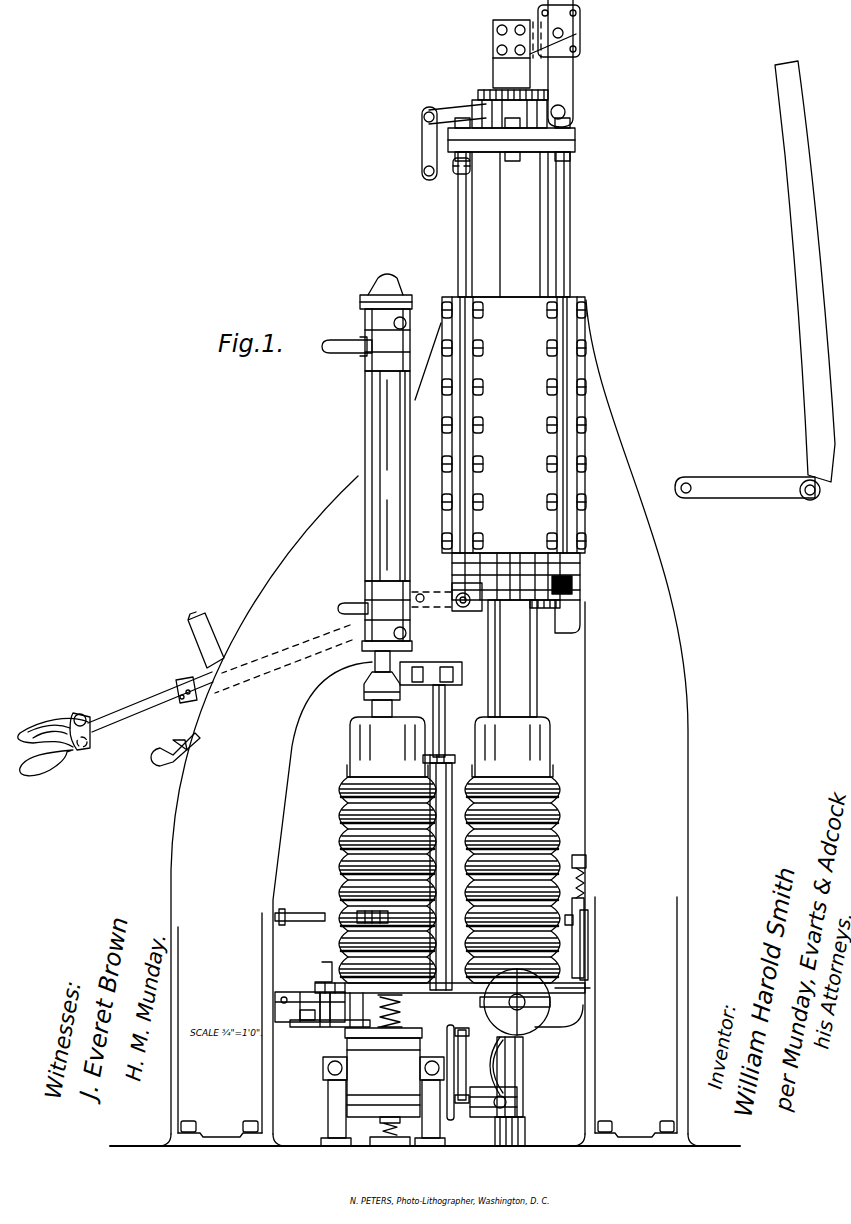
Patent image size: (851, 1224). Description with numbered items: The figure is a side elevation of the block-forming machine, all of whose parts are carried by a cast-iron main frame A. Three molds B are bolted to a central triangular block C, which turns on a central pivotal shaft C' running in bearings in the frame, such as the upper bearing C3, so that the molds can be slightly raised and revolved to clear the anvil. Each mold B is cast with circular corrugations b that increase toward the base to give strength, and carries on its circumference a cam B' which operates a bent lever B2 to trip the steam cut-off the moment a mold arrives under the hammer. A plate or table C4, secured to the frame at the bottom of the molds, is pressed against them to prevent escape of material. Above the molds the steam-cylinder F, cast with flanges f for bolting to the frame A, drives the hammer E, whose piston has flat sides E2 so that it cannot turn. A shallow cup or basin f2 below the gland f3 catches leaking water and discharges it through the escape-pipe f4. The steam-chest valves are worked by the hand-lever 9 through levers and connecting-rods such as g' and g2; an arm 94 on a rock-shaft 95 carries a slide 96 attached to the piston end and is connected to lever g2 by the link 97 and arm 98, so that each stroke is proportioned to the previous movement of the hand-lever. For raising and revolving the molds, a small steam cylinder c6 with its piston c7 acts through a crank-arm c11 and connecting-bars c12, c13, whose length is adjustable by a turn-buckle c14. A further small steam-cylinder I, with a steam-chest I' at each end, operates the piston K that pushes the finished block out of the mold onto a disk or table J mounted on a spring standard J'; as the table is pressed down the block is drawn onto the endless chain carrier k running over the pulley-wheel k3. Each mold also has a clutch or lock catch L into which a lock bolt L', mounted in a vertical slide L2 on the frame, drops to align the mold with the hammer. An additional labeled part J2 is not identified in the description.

The main frame A is at (425, 723).
The hand-lever 9 is at (130, 732).
The small steam-cylinder I is at (371, 473).
The steam-chest I' is at (347, 466).
The discharging piston K is at (364, 692).
The steam-cylinder F is at (506, 256).
The flat sides E2 is at (517, 54).
The arm 94 is at (573, 88).
The rock-shaft 95 is at (565, 112).
The slide 96 is at (580, 36).
The link 97 is at (418, 143).
The arm 98 is at (455, 112).
The lever g2 is at (431, 176).
The flanges f is at (470, 370).
The gland f3 is at (574, 580).
The cup or basin f2 is at (562, 606).
The escape-pipe f4 is at (567, 623).
The connecting-rod g' is at (447, 607).
The hammer E is at (520, 658).
The bearing C3 is at (431, 664).
The central pivotal shaft C' is at (450, 721).
The collar J2 is at (446, 755).
The central triangular block C is at (446, 859).
The molds B is at (453, 850).
The corrugations b is at (343, 851).
The cam B' is at (342, 901).
The bent lever B2 is at (292, 919).
The disk or table J is at (308, 972).
The clutch or lock catch L is at (460, 945).
The vertical slide L2 is at (586, 912).
The clutch or lock bolt L' is at (602, 945).
The plate or table C4 is at (550, 1001).
The small steam cylinder c6 is at (322, 1009).
The piston c7 is at (298, 1019).
The spring standard J' is at (344, 1033).
The pulley-wheel k3 is at (383, 1072).
The endless chain carrier k is at (347, 1116).
The connecting-bar c12 is at (442, 1057).
The connecting-bar c13 is at (520, 1060).
The turn-buckle c14 is at (510, 1048).
The crank-arm c11 is at (517, 1100).